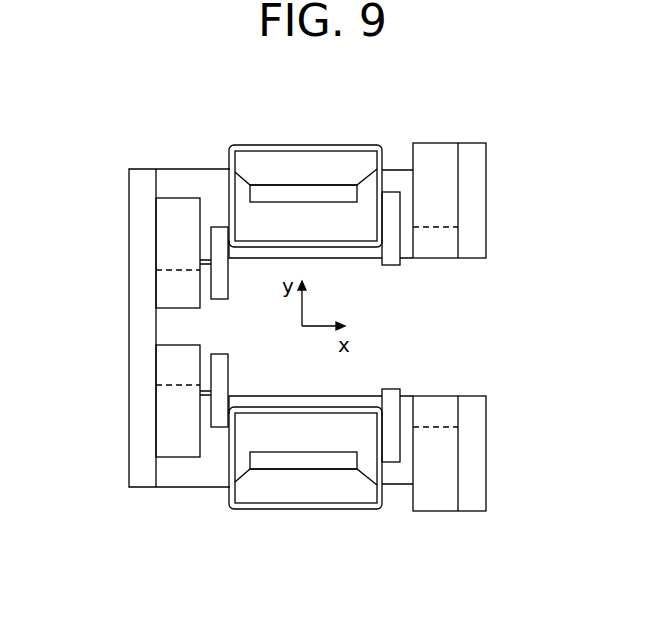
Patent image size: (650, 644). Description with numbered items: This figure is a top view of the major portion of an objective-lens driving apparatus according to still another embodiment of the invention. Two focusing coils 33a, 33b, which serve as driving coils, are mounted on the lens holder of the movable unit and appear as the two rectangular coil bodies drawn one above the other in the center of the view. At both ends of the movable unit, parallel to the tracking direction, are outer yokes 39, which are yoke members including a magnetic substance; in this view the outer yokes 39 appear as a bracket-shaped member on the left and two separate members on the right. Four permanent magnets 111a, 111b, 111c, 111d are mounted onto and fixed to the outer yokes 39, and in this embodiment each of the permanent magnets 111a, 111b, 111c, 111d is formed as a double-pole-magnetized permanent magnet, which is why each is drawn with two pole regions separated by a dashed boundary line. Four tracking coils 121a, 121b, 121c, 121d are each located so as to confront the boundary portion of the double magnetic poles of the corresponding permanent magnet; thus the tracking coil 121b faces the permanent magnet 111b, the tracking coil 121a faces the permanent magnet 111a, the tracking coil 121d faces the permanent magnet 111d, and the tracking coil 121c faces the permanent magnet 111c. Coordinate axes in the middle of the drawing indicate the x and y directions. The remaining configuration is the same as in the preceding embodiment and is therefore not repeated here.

The outer yoke 39 is at (140, 342).
The focusing coil 33a is at (310, 506).
The focusing coil 33b is at (248, 147).
The permanent magnet 111a is at (455, 493).
The permanent magnet 111b is at (435, 152).
The permanent magnet 111c is at (173, 450).
The permanent magnet 111d is at (167, 213).
The tracking coil 121a is at (390, 393).
The tracking coil 121b is at (395, 250).
The tracking coil 121c is at (223, 428).
The tracking coil 121d is at (222, 228).